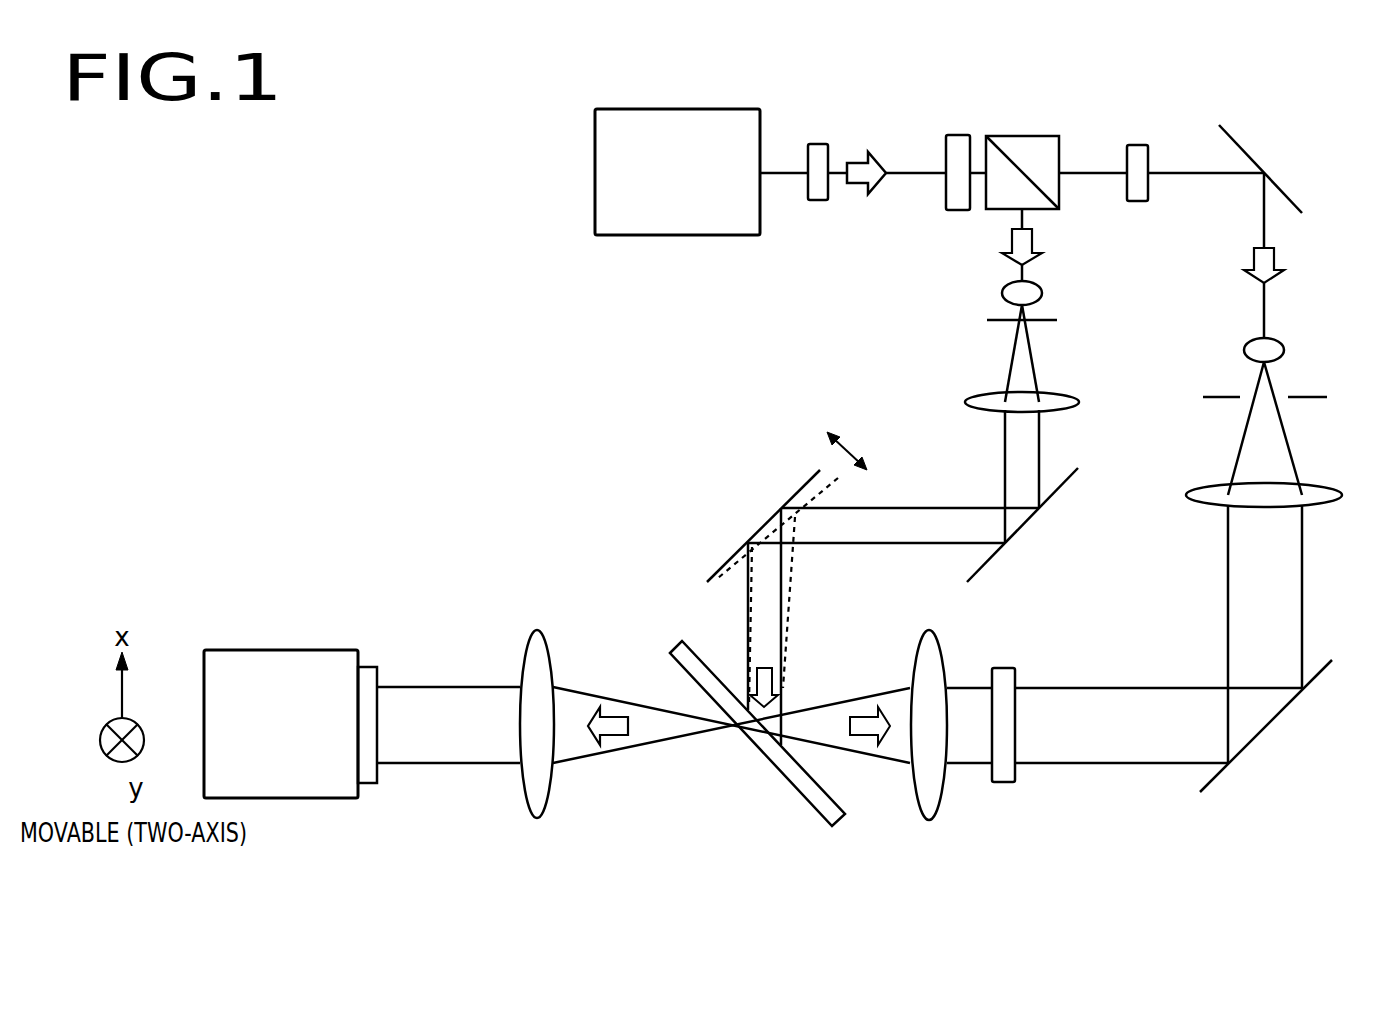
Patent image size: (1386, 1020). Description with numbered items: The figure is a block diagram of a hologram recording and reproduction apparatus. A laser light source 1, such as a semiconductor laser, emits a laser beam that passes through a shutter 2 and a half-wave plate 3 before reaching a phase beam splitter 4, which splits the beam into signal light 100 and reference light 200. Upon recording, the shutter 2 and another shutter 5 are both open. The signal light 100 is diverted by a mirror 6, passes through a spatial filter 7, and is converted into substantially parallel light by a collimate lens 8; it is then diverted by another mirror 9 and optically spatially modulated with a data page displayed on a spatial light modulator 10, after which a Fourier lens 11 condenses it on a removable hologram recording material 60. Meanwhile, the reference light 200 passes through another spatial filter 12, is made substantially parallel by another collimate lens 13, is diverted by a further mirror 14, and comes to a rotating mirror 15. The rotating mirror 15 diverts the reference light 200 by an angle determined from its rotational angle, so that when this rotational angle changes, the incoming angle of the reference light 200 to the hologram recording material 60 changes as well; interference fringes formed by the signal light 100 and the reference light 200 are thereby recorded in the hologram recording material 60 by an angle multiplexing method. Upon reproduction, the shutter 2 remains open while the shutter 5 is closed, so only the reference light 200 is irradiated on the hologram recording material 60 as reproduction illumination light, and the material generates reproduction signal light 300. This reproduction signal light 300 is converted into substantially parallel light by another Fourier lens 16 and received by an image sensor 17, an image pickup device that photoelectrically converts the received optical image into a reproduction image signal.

The laser light source 1 is at (679, 108).
The shutter 2 is at (818, 143).
The half-wave plate 3 is at (958, 134).
The phase beam splitter 4 is at (1023, 135).
The shutter 5 is at (1140, 144).
The mirror 6 is at (1242, 143).
The spatial filter 7 is at (1276, 379).
The collimate lens 8 is at (1327, 484).
The mirror 9 is at (1276, 714).
The spatial light modulator 10 is at (1001, 784).
The Fourier lens 11 is at (928, 629).
The spatial filter 12 is at (1040, 300).
The collimate lens 13 is at (1064, 394).
The mirror 14 is at (1028, 524).
The rotating mirror 15 is at (765, 518).
The Fourier lens 16 is at (537, 629).
The image sensor 17 is at (283, 649).
The hologram recording material 60 is at (793, 788).
The signal light 100 is at (1278, 258).
The reference light 200 is at (1002, 242).
The reproduction signal light 300 is at (618, 697).